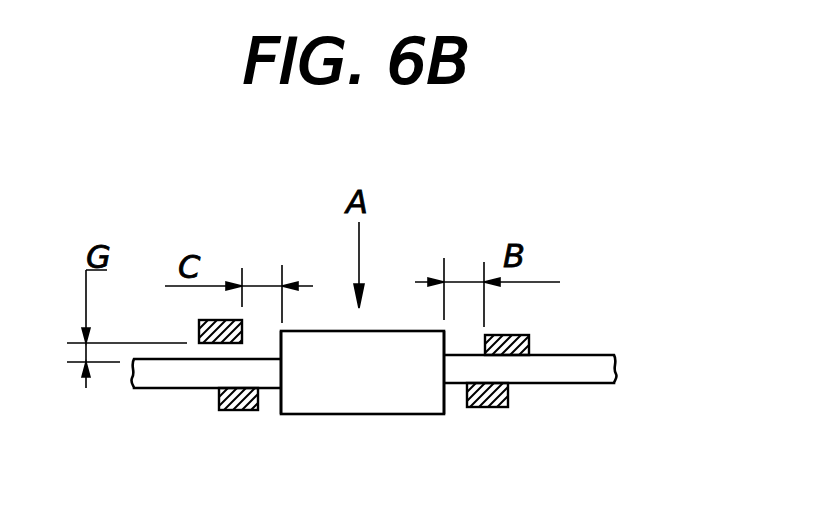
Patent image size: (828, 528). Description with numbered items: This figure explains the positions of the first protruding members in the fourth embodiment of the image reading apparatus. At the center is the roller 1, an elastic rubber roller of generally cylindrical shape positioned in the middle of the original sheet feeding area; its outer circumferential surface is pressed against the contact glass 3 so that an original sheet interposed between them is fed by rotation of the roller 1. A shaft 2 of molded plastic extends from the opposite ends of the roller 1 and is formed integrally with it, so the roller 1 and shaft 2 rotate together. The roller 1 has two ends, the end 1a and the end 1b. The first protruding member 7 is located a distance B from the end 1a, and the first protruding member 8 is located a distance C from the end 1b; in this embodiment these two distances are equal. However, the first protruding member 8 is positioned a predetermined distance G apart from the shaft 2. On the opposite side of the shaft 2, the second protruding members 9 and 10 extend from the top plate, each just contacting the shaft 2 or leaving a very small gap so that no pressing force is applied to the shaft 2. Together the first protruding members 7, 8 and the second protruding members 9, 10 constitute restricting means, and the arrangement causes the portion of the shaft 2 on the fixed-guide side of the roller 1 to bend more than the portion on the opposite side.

The roller 1 is at (362, 395).
The end of the roller 1a is at (447, 398).
The end of the roller 1b is at (277, 407).
The shaft 2 is at (570, 373).
The contact glass 3 is at (162, 378).
The first protruding member 7 is at (518, 335).
The first protruding member 8 is at (197, 323).
The second protruding member 9 is at (493, 408).
The second protruding member 10 is at (223, 412).